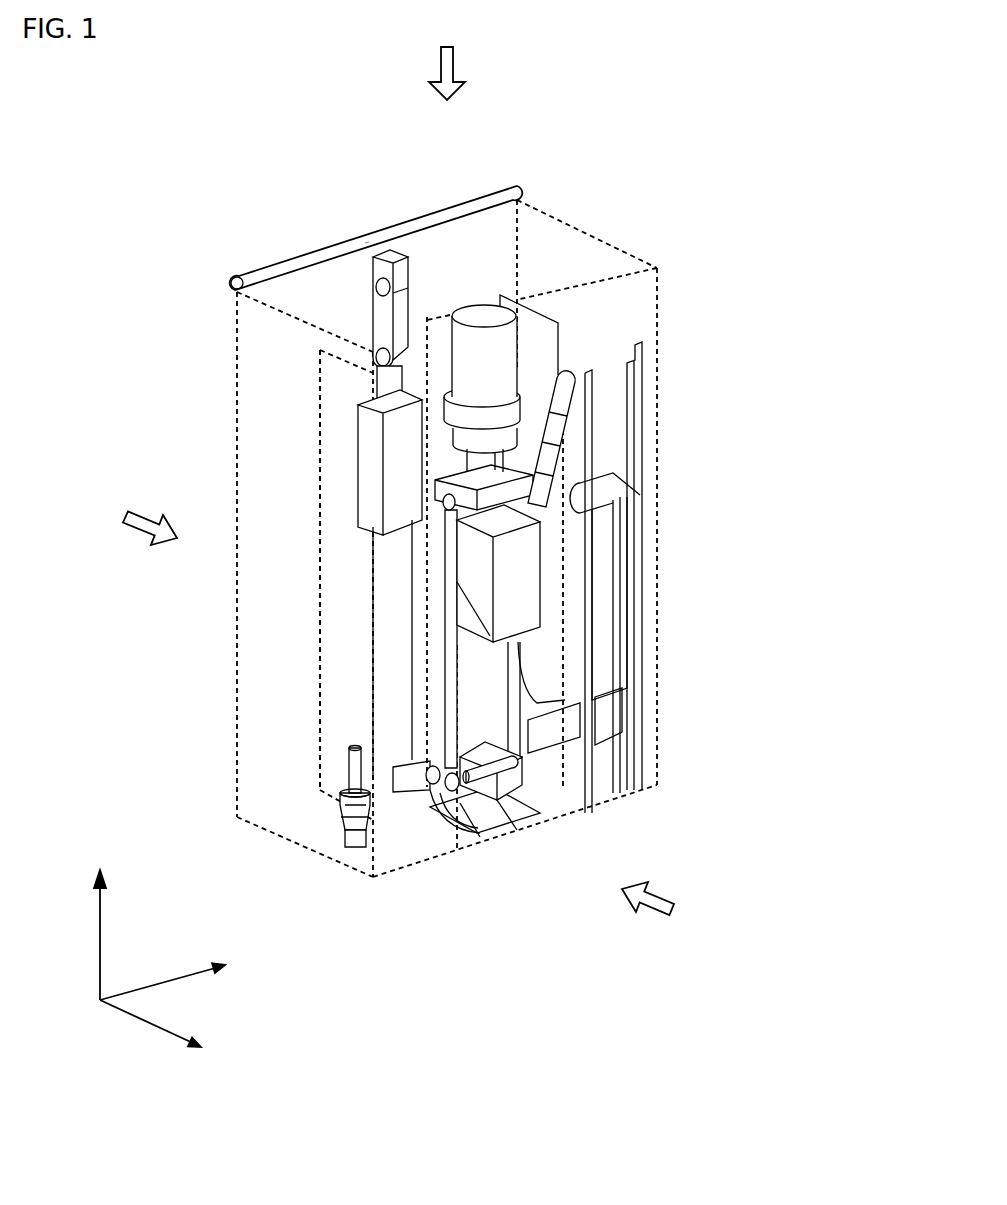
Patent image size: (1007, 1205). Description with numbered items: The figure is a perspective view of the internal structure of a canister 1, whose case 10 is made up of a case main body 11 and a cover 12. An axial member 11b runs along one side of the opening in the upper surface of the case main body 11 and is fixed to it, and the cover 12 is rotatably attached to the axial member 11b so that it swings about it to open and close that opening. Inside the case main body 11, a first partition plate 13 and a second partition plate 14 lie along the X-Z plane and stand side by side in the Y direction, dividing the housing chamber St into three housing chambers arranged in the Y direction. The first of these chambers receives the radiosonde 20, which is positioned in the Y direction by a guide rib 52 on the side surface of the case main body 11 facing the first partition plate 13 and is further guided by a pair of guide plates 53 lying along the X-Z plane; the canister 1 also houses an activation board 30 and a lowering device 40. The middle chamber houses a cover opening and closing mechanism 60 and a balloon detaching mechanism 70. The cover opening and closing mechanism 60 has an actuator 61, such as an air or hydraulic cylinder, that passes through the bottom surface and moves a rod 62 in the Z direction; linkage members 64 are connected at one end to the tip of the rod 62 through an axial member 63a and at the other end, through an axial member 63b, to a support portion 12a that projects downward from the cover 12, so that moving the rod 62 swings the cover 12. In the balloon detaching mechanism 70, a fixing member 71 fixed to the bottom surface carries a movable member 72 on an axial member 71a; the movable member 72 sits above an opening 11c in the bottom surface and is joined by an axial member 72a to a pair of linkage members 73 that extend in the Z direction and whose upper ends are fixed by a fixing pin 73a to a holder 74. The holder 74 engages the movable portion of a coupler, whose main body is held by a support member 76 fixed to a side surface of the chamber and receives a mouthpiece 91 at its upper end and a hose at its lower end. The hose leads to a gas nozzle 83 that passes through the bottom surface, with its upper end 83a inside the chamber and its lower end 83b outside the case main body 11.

The canister 1 is at (255, 200).
The case 10 is at (481, 561).
The case main body 11 is at (660, 318).
The axial member 11b is at (367, 217).
The opening 11c is at (425, 803).
The cover 12 is at (560, 221).
The support portion 12a is at (402, 265).
The first partition plate 13 is at (526, 369).
The second partition plate 14 is at (320, 360).
The radiosonde 20 is at (620, 604).
The activation board 30 is at (602, 708).
The lowering device 40 is at (546, 441).
The guide rib 52 is at (642, 350).
The guide plates 53 is at (577, 785).
The cover opening and closing mechanism 60 is at (350, 571).
The actuator 61 is at (357, 497).
The rod 62 is at (382, 390).
The axial member 63a is at (266, 283).
The axial member 63b is at (372, 282).
The linkage members 64 is at (383, 269).
The balloon detaching mechanism 70 is at (440, 653).
The fixing member 71 is at (466, 832).
The axial member 71a is at (468, 785).
The movable member 72 is at (398, 775).
The axial member 72a is at (482, 773).
The linkage members 73 is at (373, 707).
The fixing pin 73a is at (440, 515).
The holder 74 is at (437, 462).
The support member 76 is at (520, 600).
The gas nozzle 83 is at (275, 834).
The upper end 83a is at (355, 770).
The lower end 83b is at (357, 842).
The mouthpiece 91 is at (503, 380).
The housing chamber St is at (483, 240).